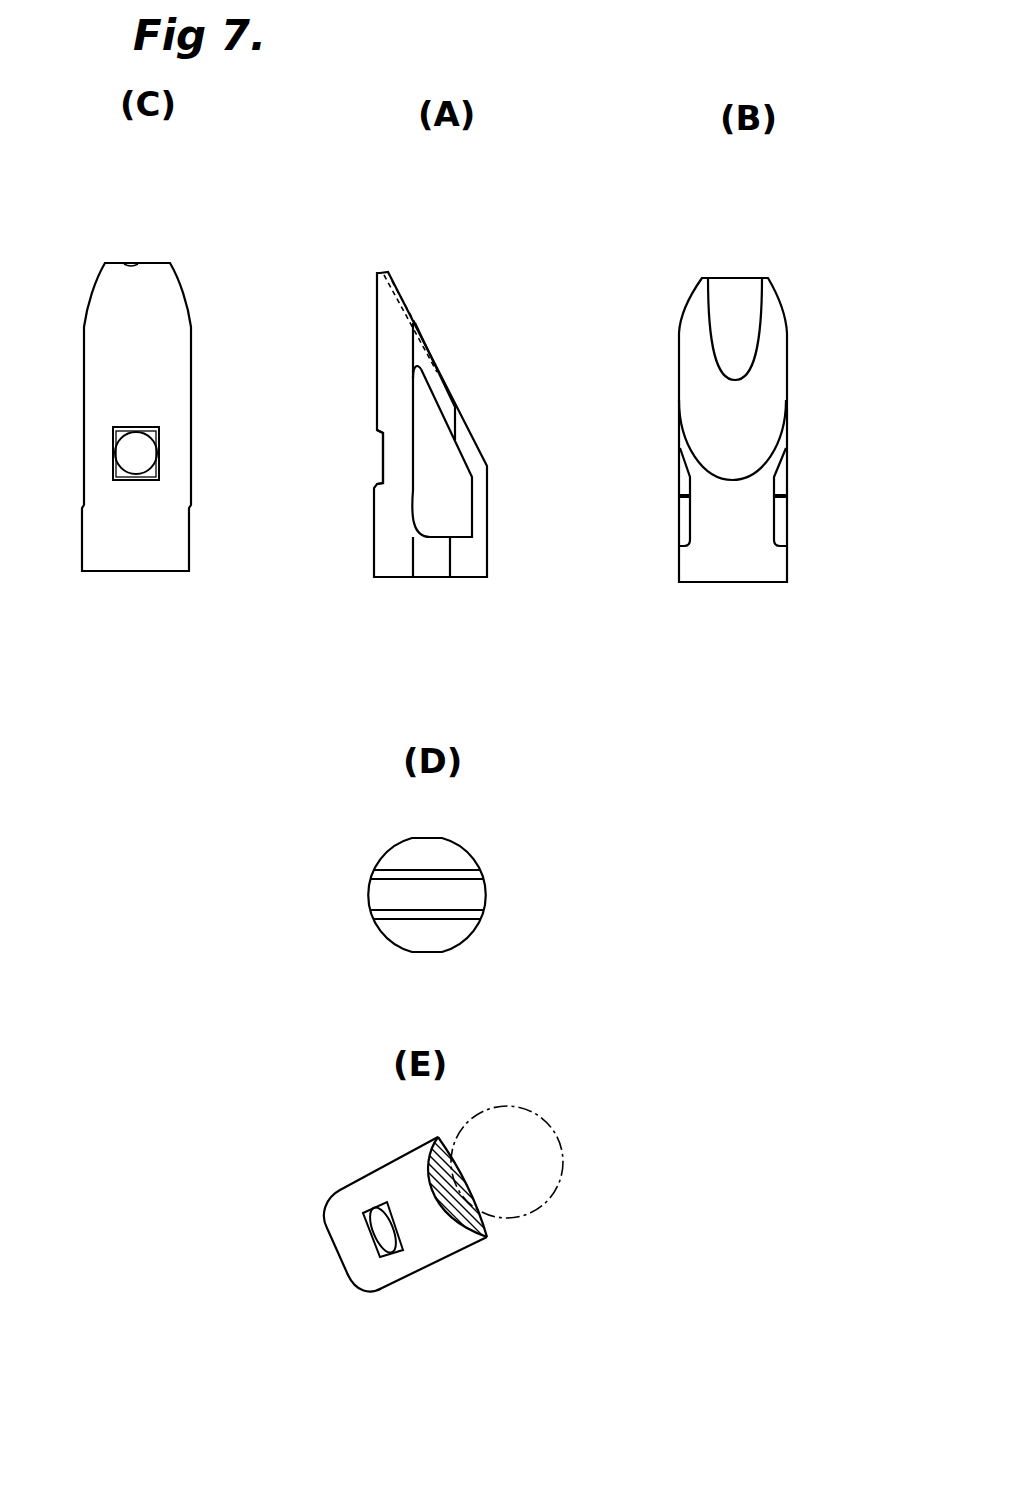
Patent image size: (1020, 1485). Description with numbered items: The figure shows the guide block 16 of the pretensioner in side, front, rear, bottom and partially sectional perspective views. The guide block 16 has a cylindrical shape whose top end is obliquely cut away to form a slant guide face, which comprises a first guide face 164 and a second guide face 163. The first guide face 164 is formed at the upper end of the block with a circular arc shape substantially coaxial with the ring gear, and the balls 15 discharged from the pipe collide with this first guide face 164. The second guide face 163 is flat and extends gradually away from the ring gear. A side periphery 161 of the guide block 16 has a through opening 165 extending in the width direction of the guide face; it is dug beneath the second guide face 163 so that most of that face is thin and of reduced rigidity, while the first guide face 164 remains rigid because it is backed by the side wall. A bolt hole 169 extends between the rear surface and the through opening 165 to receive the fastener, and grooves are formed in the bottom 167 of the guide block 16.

The ball 15 is at (554, 1133).
The guide block 16 is at (137, 248).
The side periphery 161 is at (113, 558).
The second guide face 163 is at (470, 432).
The first guide face 164 is at (408, 308).
The through opening 165 is at (455, 497).
The bottom 167 is at (398, 577).
The bolt hole 169 is at (152, 448).